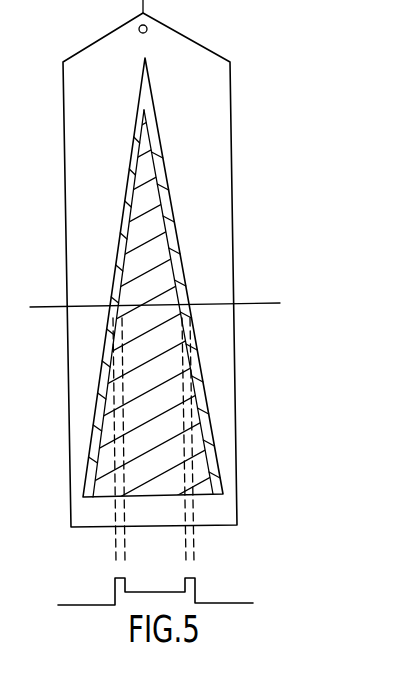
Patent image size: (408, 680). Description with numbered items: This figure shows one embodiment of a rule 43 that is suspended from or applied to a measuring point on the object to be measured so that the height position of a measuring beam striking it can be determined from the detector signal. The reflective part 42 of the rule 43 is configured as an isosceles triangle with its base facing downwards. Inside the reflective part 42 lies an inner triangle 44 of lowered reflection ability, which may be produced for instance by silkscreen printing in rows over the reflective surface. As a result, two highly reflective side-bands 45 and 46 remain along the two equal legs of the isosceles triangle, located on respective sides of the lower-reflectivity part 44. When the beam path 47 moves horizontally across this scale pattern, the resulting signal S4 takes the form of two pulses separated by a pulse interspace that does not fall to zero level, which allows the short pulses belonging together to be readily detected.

The reflective part 42 is at (197, 172).
The rule 43 is at (225, 170).
The inner triangle 44 is at (165, 348).
The highly reflective side-band 45 is at (123, 227).
The highly reflective side-band 46 is at (178, 227).
The beam path 47 is at (45, 306).
The signal S4 is at (90, 605).